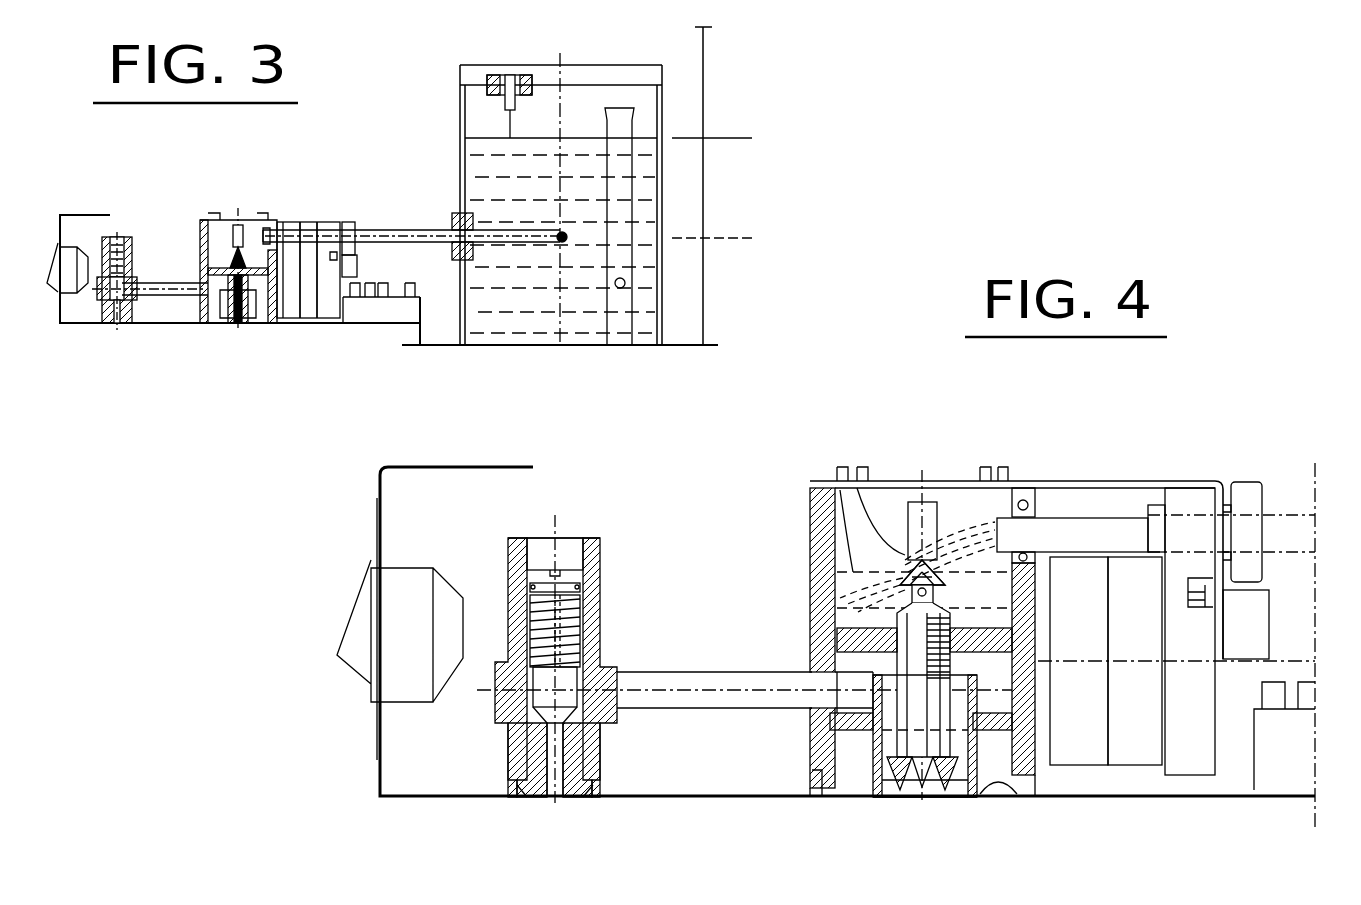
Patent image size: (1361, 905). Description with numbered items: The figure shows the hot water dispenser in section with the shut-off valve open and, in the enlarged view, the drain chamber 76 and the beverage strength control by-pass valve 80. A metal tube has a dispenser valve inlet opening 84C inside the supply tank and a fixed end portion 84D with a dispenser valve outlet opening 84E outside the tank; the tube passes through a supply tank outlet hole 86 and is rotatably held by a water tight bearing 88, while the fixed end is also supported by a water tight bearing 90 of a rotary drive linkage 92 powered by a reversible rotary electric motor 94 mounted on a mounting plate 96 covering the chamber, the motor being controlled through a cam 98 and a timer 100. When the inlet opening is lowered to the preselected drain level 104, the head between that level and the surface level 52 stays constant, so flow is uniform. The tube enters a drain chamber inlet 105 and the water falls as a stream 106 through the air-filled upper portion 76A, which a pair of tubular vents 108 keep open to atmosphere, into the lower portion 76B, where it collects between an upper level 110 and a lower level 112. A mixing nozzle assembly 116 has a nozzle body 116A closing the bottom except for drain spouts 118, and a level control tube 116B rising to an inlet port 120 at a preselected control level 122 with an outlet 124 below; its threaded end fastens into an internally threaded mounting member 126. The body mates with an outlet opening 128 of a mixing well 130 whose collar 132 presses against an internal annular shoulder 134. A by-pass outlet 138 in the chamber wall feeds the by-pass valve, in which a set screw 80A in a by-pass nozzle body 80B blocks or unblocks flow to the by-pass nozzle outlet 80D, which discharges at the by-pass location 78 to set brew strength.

In FIG. 3, the preselected surface level 52 is at (712, 138).
In FIG. 4, the drain chamber 76 is at (820, 557).
In FIG. 4, the upper portion of drain chamber 76A is at (840, 492).
In FIG. 4, the lower portion of drain chamber 76B is at (848, 583).
In FIG. 4, the by-pass location 78 is at (560, 797).
In FIG. 4, the beverage strength control by-pass valve 80 is at (548, 693).
In FIG. 4, the set screw 80A is at (606, 626).
In FIG. 4, the by-pass nozzle body 80B is at (515, 737).
In FIG. 4, the by-pass nozzle outlet 80D is at (548, 795).
In FIG. 3, the dispenser valve inlet opening 84C is at (565, 243).
In FIG. 3, the fixed end portion 84D is at (365, 230).
In FIG. 3, the dispenser valve outlet opening 84E is at (260, 236).
In FIG. 4, the dispenser valve outlet opening 84E is at (977, 522).
In FIG. 3, the supply tank outlet hole 86 is at (452, 235).
In FIG. 3, the water tight bearing 88 is at (458, 213).
In FIG. 3, the water tight bearing 90 is at (314, 250).
In FIG. 4, the water tight bearing 90 is at (1154, 509).
In FIG. 3, the rotary drive linkage 92 is at (327, 313).
In FIG. 4, the rotary drive linkage 92 is at (1190, 757).
In FIG. 3, the reversible rotary electric motor 94 is at (293, 313).
In FIG. 4, the reversible rotary electric motor 94 is at (1131, 744).
In FIG. 3, the mounting plate 96 is at (358, 272).
In FIG. 4, the mounting plate 96 is at (1265, 632).
In FIG. 3, the cam 98 is at (352, 222).
In FIG. 4, the cam 98 is at (1248, 505).
In FIG. 3, the timer 100 is at (380, 313).
In FIG. 4, the timer 100 is at (1287, 778).
In FIG. 3, the preselected drain level 104 is at (725, 238).
In FIG. 4, the drain chamber inlet 105 is at (1013, 540).
In FIG. 4, the stream 106 is at (947, 520).
In FIG. 4, the tubular vents 108 is at (918, 500).
In FIG. 4, the upper level 110 is at (818, 520).
In FIG. 4, the lower level 112 is at (837, 707).
In FIG. 4, the mixing nozzle assembly 116 is at (848, 774).
In FIG. 4, the nozzle body 116A is at (908, 790).
In FIG. 4, the level control tube 116B is at (873, 737).
In FIG. 4, the drain spouts 118 is at (975, 797).
In FIG. 4, the inlet port 120 is at (852, 486).
In FIG. 4, the preselected control level 122 is at (855, 627).
In FIG. 4, the outlet 124 is at (928, 787).
In FIG. 4, the internally threaded mounting member 126 is at (862, 657).
In FIG. 4, the outlet opening 128 is at (985, 775).
In FIG. 4, the mixing well 130 is at (813, 778).
In FIG. 4, the collar 132 is at (1050, 765).
In FIG. 4, the internal annular shoulder 134 is at (832, 728).
In FIG. 4, the by-pass outlet 138 is at (730, 676).